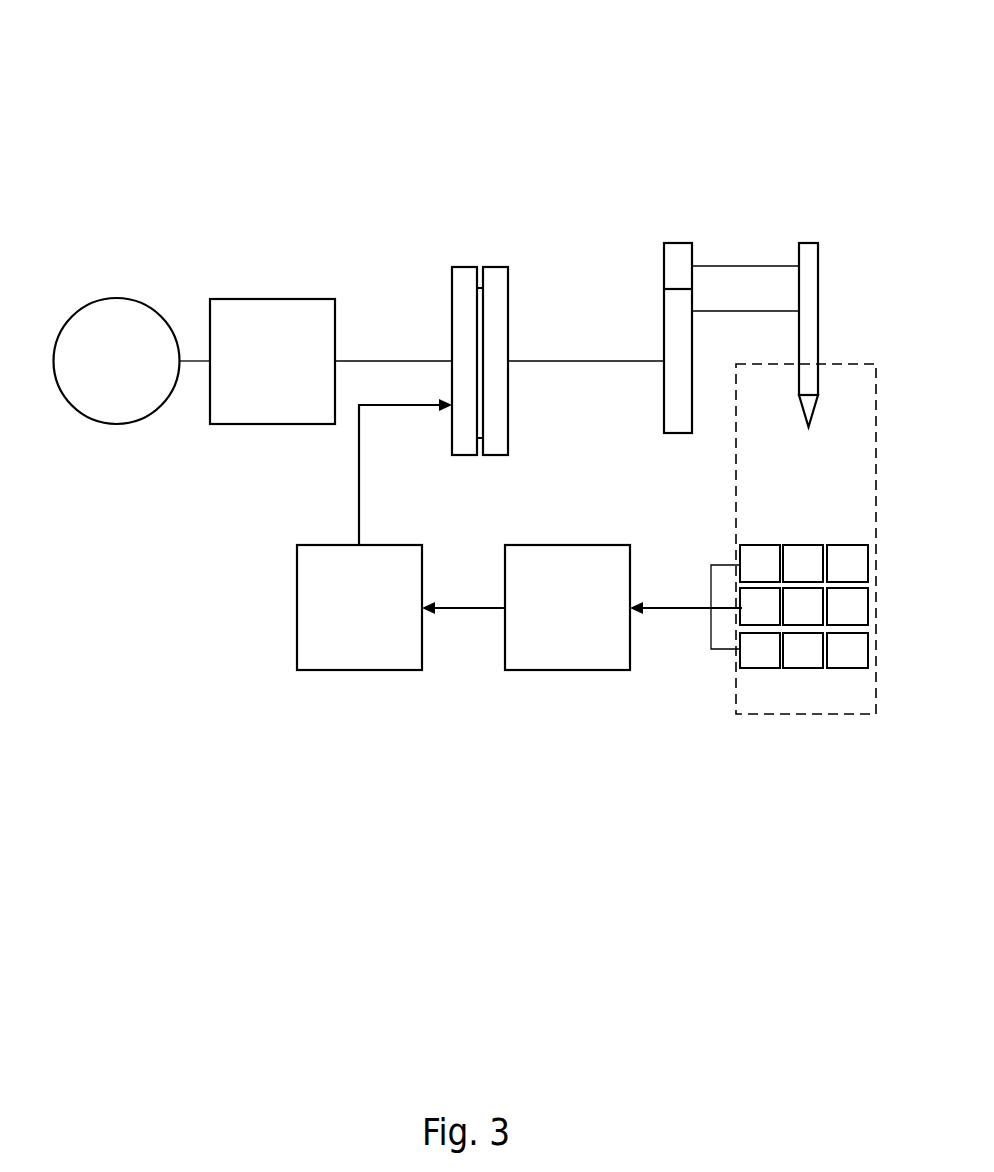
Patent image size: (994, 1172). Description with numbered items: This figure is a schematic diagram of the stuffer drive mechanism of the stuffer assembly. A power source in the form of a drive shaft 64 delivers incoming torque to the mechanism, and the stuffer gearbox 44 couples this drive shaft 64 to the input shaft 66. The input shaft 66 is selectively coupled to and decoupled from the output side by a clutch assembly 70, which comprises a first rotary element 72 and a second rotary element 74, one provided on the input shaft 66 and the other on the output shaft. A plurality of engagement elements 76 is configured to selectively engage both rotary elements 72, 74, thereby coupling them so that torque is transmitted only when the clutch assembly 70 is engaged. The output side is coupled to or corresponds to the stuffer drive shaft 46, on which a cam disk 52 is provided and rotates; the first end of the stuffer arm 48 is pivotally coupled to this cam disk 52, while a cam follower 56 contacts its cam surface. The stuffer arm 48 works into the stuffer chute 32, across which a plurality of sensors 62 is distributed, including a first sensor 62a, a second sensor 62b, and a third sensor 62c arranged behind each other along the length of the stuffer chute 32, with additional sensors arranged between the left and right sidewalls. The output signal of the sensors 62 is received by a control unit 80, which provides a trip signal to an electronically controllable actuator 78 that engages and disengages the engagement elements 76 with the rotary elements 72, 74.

The drive shaft 64 is at (112, 317).
The stuffer gearbox 44 is at (262, 320).
The input shaft 66 is at (380, 360).
The clutch assembly 70 is at (490, 235).
The second rotary element 74 is at (453, 297).
The engagement elements 76 is at (482, 287).
The first rotary element 72 is at (512, 288).
The stuffer drive shaft 46 is at (586, 270).
The cam disk 52 is at (668, 254).
The cam follower 56 is at (680, 257).
The stuffer arm 48 is at (812, 273).
The stuffer chute 32 is at (845, 362).
The plurality of sensors 62 is at (773, 708).
The first sensor 62a is at (758, 662).
The second sensor 62b is at (775, 612).
The third sensor 62c is at (773, 565).
The actuator 78 is at (362, 647).
The control unit 80 is at (567, 652).